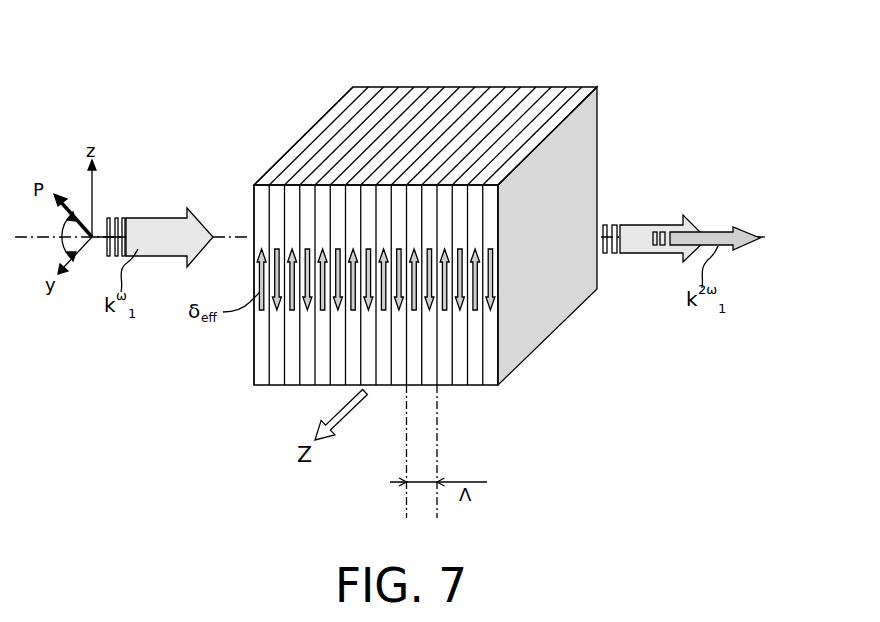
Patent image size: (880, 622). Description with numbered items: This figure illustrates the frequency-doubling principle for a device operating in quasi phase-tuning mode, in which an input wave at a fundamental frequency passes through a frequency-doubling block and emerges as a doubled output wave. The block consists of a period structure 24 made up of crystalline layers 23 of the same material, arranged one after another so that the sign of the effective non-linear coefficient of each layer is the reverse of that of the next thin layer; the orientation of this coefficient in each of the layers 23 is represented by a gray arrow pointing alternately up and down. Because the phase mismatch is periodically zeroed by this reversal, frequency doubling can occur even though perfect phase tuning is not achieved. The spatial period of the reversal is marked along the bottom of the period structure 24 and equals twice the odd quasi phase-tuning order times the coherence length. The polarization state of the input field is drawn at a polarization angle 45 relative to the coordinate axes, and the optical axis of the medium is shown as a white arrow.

The crystalline layers 23 is at (332, 113).
The period structure 24 is at (597, 78).
The polarization angle 45 is at (53, 236).